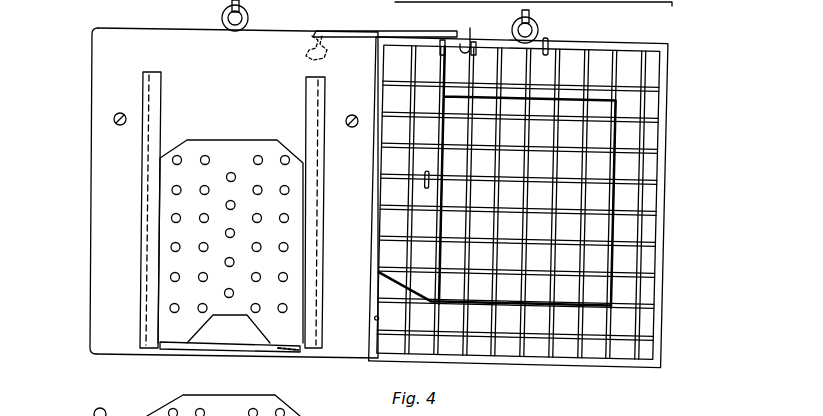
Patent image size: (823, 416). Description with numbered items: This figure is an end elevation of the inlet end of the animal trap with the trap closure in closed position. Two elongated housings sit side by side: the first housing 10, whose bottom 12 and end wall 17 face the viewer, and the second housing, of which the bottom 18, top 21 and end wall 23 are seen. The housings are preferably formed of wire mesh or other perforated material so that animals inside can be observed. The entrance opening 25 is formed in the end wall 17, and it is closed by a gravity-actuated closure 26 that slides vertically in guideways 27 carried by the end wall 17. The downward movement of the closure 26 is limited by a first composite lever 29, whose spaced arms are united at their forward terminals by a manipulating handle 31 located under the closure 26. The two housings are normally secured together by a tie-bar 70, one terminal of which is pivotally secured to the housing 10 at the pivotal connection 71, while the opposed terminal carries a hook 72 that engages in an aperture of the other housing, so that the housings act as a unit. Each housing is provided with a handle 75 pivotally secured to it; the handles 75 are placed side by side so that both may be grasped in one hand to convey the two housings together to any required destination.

The housing 10 is at (148, 30).
The bottom 12 is at (604, 3).
The end wall 17 is at (103, 257).
The bottom 18 is at (640, 383).
The top 21 is at (610, 45).
The end wall 23 is at (665, 200).
The entrance opening 25 is at (213, 335).
The closure 26 is at (205, 152).
The guideways 27 is at (157, 87).
The composite lever 29 is at (235, 344).
The manipulating handle 31 is at (283, 350).
The tie-bar 70 is at (407, 32).
The pivotal connection 71 is at (306, 37).
The hook 72 is at (494, 33).
The handle 75 is at (240, 3).